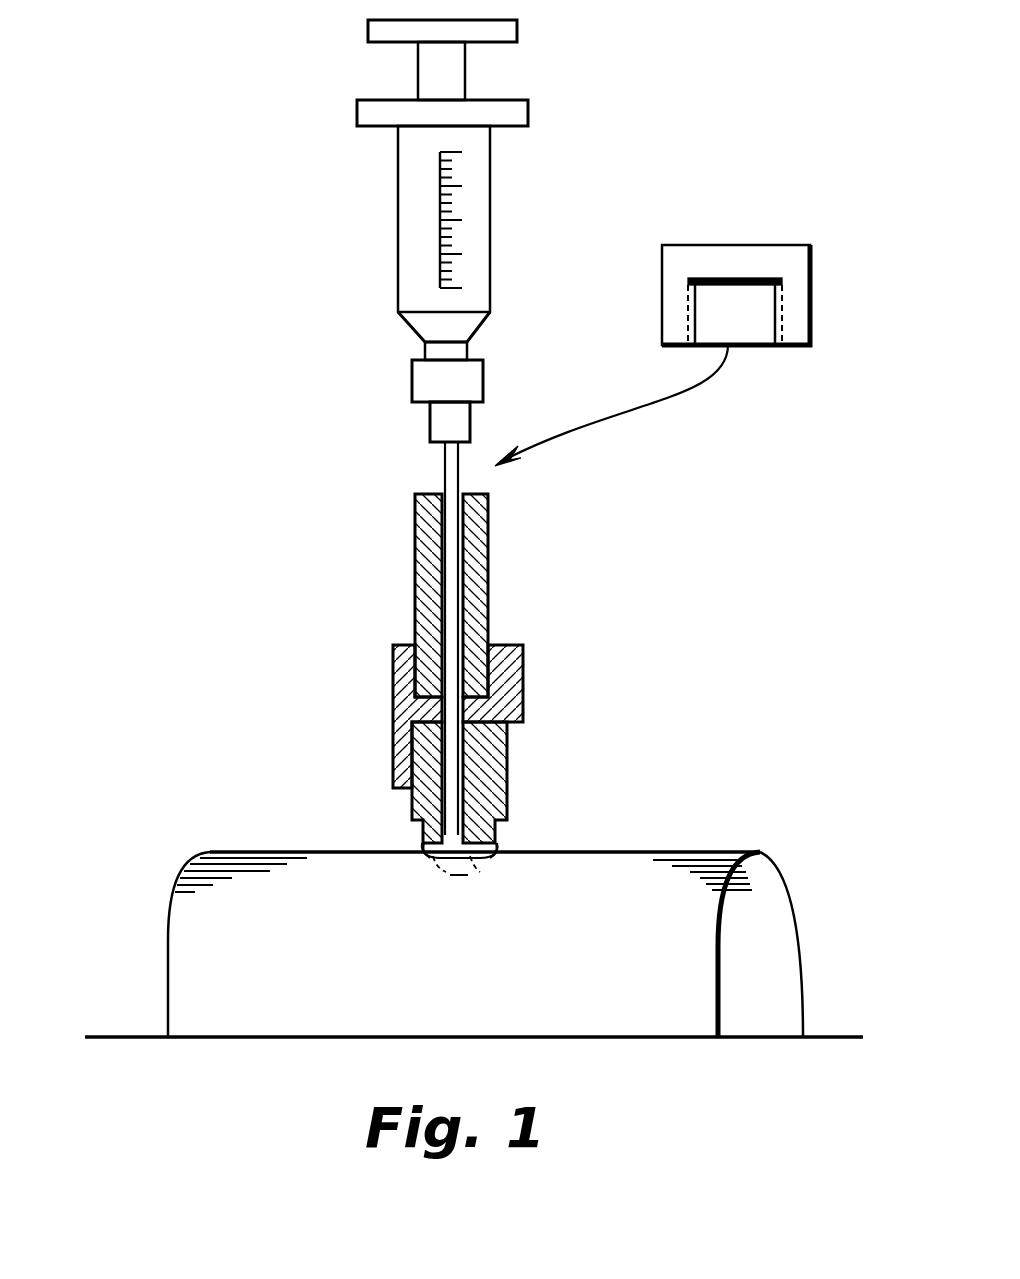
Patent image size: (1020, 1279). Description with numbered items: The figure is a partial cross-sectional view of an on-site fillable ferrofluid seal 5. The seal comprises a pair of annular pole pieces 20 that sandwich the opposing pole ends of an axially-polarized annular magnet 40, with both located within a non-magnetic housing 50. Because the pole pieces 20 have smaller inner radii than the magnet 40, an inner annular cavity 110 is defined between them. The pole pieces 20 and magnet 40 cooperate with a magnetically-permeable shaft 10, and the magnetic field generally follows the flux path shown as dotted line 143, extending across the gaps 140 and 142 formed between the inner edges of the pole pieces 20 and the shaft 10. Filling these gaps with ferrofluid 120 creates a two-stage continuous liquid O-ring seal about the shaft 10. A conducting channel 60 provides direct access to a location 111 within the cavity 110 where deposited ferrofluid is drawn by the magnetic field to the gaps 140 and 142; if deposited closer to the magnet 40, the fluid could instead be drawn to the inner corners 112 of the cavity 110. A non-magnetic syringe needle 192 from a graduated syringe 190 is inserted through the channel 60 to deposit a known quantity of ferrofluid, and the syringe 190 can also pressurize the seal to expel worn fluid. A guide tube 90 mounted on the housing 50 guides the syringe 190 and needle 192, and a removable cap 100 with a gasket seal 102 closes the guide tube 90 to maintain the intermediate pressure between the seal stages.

The fillable ferrofluid seal 5 is at (170, 283).
The shaft 10 is at (705, 917).
The annular pole pieces 20 is at (410, 733).
The annular magnet 40 is at (510, 775).
The housing 50 is at (395, 656).
The conducting channel 60 is at (522, 660).
The guide tube 90 is at (475, 583).
The removable cap 100 is at (798, 298).
The gasket seal 102 is at (730, 278).
The inner annular cavity 110 is at (507, 816).
The location 111 is at (432, 818).
The inner corners 112 is at (506, 802).
The ferrofluid 120 is at (453, 853).
The gap 140 is at (424, 848).
The gap 142 is at (500, 846).
The magnetic flux path 143 is at (458, 877).
The syringe 190 is at (480, 225).
The syringe needle 192 is at (448, 632).